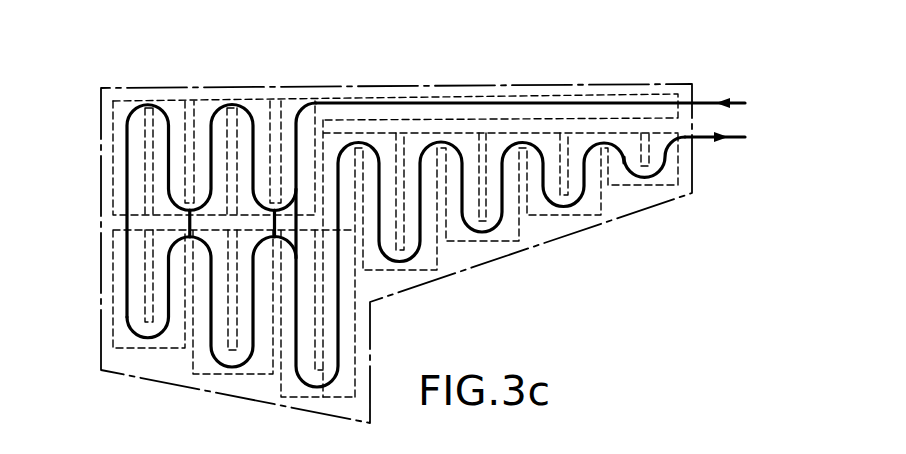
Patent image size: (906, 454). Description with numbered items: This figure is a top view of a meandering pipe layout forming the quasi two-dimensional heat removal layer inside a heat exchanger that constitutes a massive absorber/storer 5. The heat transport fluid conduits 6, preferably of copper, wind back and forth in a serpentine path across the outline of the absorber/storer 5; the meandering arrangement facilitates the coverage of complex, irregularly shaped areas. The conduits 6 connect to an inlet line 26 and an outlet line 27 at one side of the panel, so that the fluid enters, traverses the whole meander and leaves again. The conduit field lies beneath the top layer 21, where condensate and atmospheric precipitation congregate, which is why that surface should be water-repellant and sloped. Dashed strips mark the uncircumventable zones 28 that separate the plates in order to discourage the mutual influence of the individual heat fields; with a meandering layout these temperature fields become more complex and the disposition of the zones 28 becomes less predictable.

The massive absorber/storer 5 is at (101, 170).
The heat transport fluid conduits 6 is at (430, 232).
The top layer 21 is at (395, 213).
The fluid inlet line 26 is at (737, 101).
The fluid outlet line 27 is at (734, 139).
The zones separating the plates 28 is at (232, 128).